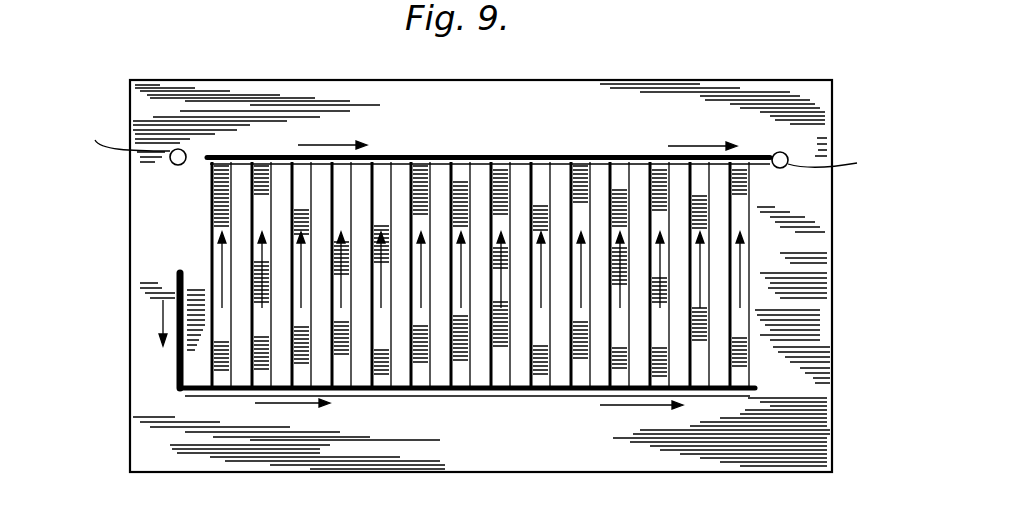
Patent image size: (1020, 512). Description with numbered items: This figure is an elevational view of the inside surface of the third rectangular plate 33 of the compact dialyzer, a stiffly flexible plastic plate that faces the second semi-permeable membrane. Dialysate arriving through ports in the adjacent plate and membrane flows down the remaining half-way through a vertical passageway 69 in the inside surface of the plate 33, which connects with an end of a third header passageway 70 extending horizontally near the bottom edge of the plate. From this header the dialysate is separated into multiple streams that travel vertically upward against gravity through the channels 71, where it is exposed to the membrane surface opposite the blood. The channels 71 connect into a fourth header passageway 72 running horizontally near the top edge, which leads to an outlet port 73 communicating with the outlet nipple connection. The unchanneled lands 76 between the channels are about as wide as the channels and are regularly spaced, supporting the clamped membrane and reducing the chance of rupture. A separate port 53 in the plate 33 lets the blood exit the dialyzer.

The third rectangular plate 33 is at (762, 80).
The port 53 is at (171, 161).
The vertical passageway 69 is at (177, 352).
The third header passageway 70 is at (470, 387).
The dialysate channels 71 is at (502, 173).
The fourth header passageway 72 is at (543, 162).
The outlet port 73 is at (787, 155).
The lands 76 is at (597, 175).